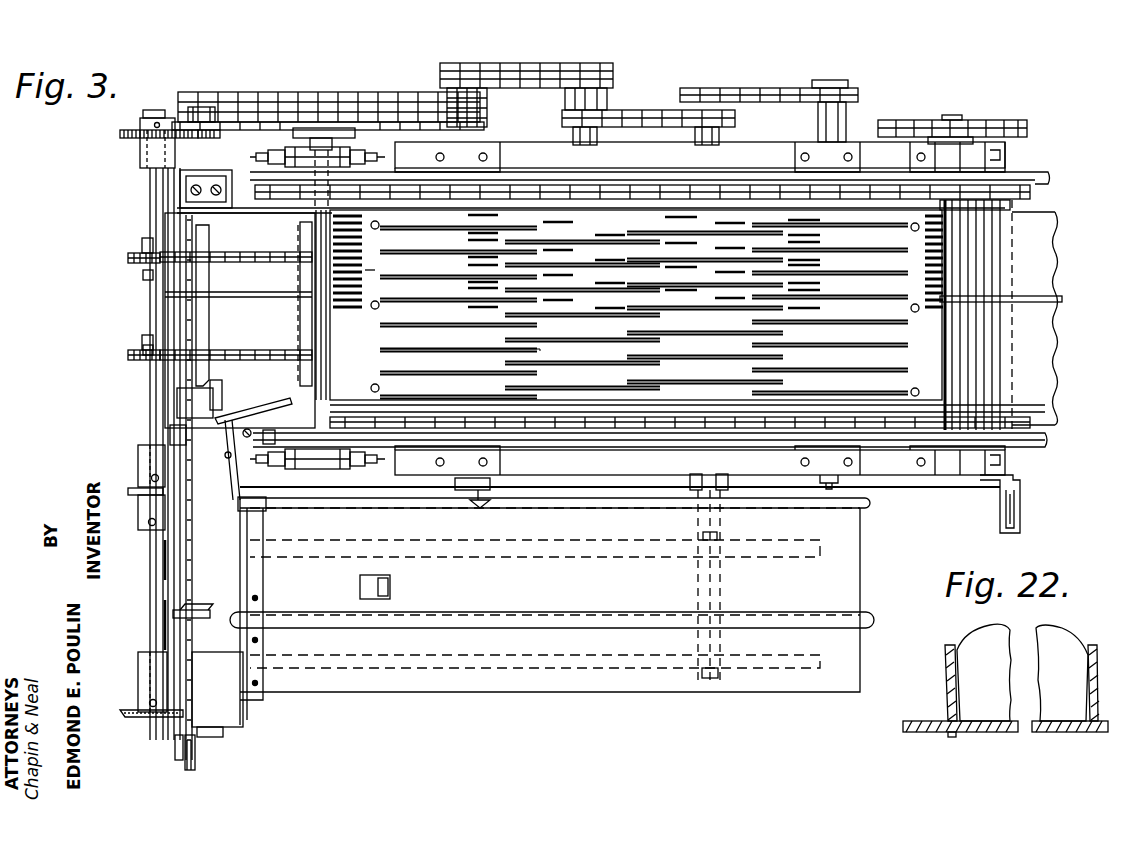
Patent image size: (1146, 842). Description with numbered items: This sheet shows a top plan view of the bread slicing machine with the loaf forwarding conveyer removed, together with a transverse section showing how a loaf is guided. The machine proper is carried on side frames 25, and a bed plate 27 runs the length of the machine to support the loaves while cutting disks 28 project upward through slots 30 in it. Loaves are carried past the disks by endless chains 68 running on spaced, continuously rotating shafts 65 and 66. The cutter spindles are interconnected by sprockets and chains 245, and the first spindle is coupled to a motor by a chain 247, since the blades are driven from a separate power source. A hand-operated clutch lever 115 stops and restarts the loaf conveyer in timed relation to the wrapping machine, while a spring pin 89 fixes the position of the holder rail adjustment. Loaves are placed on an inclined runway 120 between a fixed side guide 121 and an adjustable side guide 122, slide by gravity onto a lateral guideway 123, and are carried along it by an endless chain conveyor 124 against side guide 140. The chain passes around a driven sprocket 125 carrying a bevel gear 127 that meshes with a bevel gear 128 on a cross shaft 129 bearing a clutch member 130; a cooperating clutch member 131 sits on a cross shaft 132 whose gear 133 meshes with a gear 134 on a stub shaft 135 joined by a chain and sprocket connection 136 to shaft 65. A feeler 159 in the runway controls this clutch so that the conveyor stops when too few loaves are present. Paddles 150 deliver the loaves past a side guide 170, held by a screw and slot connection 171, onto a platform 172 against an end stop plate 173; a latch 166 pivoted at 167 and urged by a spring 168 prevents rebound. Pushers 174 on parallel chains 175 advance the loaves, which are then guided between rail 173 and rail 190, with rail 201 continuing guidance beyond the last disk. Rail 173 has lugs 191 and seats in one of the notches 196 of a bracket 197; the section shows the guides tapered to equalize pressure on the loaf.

In FIG. 3, the side frames 25 is at (612, 466).
In FIG. 3, the bed plate 27 is at (695, 382).
In FIG. 22, the bed plate 27 is at (1060, 738).
In FIG. 3, the cutting disks 28 is at (890, 342).
In FIG. 3, the slots 30 is at (410, 355).
In FIG. 3, the conveyer drive shaft 65 is at (322, 128).
In FIG. 3, the conveyer shaft 66 is at (945, 327).
In FIG. 3, the endless chains 68 is at (620, 192).
In FIG. 3, the spring pin 89 is at (492, 510).
In FIG. 3, the clutch lever 115 is at (1012, 492).
In FIG. 3, the inclined runway 120 is at (505, 695).
In FIG. 3, the fixed side guide 121 is at (575, 508).
In FIG. 3, the adjustable side guide 122 is at (665, 615).
In FIG. 3, the lateral guideway 123 is at (235, 728).
In FIG. 3, the endless chain conveyor 124 is at (185, 590).
In FIG. 3, the driven sprocket 125 is at (196, 765).
In FIG. 3, the bevel gear 127 is at (177, 757).
In FIG. 3, the bevel gear 128 is at (140, 718).
In FIG. 3, the cross shaft 129 is at (165, 626).
In FIG. 3, the clutch member 130 is at (148, 524).
In FIG. 3, the cooperating clutch member 131 is at (146, 480).
In FIG. 3, the cross shaft 132 is at (155, 433).
In FIG. 3, the gear 133 is at (127, 137).
In FIG. 3, the gear 134 is at (207, 138).
In FIG. 3, the stub shaft 135 is at (205, 106).
In FIG. 3, the chain and sprocket connection 136 is at (258, 122).
In FIG. 3, the side guide 140 is at (168, 565).
In FIG. 3, the paddles 150 is at (230, 400).
In FIG. 3, the feeler 159 is at (392, 590).
In FIG. 3, the latch 166 is at (210, 425).
In FIG. 3, the pivot 167 is at (243, 433).
In FIG. 3, the spring 168 is at (290, 400).
In FIG. 3, the side guide 170 is at (240, 503).
In FIG. 3, the screw and slot connection 171 is at (232, 450).
In FIG. 3, the platform 172 is at (185, 225).
In FIG. 3, the end stop plate 173 is at (258, 296).
In FIG. 22, the end stop plate 173 is at (945, 680).
In FIG. 3, the pushers 174 is at (210, 330).
In FIG. 3, the parallel chains 175 is at (275, 243).
In FIG. 3, the rail 190 is at (735, 432).
In FIG. 22, the rail 190 is at (1092, 708).
In FIG. 3, the lugs 191 is at (365, 270).
In FIG. 3, the notches 196 is at (165, 280).
In FIG. 3, the bracket 197 is at (170, 193).
In FIG. 3, the rail 201 is at (1005, 300).
In FIG. 3, the sprockets and chains 245 is at (565, 60).
In FIG. 3, the chain 247 is at (404, 84).